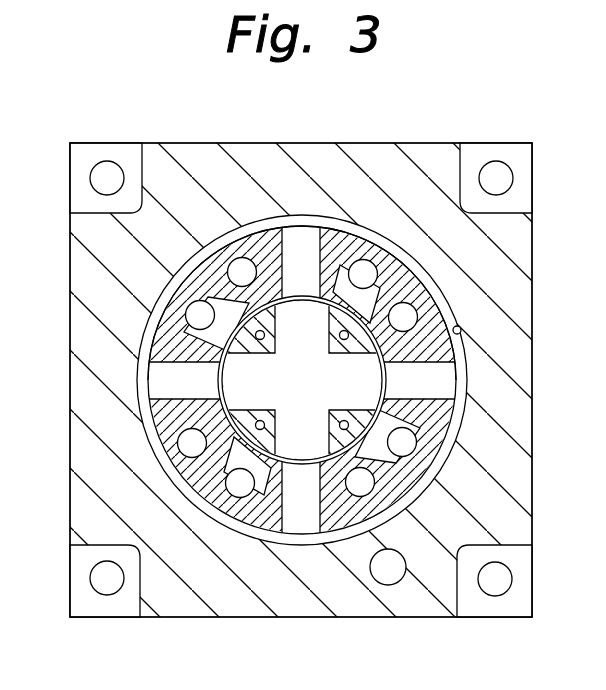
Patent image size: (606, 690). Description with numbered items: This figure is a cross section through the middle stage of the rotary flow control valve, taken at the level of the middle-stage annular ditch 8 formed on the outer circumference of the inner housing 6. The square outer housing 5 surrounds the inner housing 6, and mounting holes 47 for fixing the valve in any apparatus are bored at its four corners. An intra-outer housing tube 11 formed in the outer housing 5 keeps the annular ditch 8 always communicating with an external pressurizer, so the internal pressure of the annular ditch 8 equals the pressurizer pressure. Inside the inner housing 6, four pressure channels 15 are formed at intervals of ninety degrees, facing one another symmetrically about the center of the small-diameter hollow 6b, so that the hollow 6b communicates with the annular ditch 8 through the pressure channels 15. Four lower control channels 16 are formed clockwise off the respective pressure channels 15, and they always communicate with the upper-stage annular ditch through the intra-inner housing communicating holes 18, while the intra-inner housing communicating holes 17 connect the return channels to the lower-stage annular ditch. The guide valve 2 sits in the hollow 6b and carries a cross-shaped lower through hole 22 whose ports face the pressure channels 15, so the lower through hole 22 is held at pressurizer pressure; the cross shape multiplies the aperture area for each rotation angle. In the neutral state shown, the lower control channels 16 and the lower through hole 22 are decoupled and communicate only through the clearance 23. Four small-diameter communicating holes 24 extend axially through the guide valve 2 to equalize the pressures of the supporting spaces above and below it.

The guide valve 2 is at (187, 497).
The outer housing 5 is at (532, 284).
The inner housing 6 is at (452, 420).
The small-diameter hollow 6b is at (219, 378).
The annular ditch 8 is at (461, 328).
The intra-outer housing tube 11 is at (394, 583).
The pressure channel 15 is at (306, 226).
The lower control channel 16 is at (347, 262).
The intra-inner housing communicating hole 17 is at (241, 257).
The intra-inner housing communicating hole 18 is at (373, 263).
The lower through hole 22 is at (343, 350).
The clearance 23 is at (393, 505).
The small-diameter communicating hole 24 is at (302, 380).
The mounting hole 47 is at (91, 179).